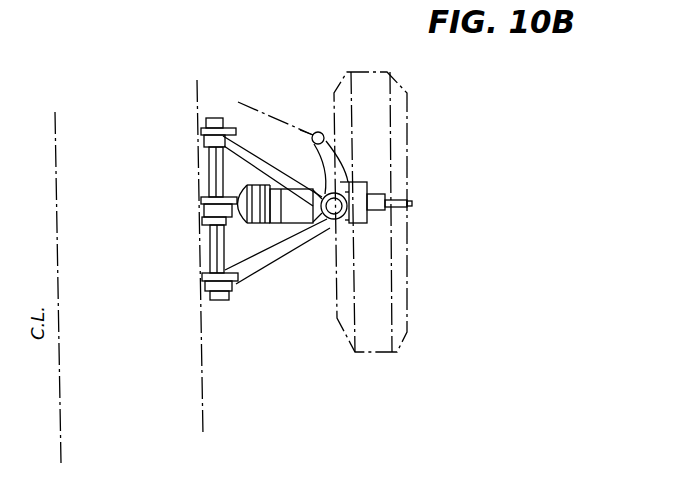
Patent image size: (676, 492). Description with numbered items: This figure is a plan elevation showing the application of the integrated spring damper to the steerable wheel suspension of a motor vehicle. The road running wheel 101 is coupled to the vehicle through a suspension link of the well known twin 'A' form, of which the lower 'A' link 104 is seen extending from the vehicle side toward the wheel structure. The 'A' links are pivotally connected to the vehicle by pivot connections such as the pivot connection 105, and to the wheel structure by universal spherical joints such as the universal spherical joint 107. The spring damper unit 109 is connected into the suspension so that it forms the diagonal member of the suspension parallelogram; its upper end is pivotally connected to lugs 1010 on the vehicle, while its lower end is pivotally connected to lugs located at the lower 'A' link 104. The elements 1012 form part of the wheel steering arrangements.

The road running wheel 101 is at (392, 118).
The lower 'A' link 104 is at (262, 268).
The pivot connection 105 is at (199, 130).
The universal spherical joint 107 is at (330, 222).
The spring damper unit 109 is at (281, 226).
The lugs 1010 is at (199, 203).
The wheel steering elements 1012 is at (272, 116).